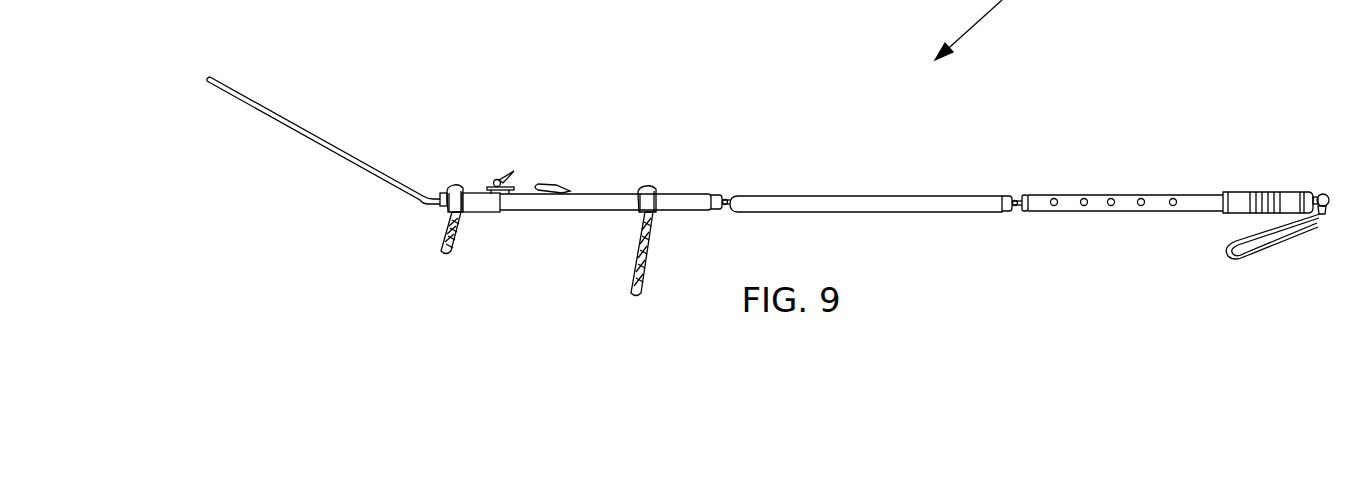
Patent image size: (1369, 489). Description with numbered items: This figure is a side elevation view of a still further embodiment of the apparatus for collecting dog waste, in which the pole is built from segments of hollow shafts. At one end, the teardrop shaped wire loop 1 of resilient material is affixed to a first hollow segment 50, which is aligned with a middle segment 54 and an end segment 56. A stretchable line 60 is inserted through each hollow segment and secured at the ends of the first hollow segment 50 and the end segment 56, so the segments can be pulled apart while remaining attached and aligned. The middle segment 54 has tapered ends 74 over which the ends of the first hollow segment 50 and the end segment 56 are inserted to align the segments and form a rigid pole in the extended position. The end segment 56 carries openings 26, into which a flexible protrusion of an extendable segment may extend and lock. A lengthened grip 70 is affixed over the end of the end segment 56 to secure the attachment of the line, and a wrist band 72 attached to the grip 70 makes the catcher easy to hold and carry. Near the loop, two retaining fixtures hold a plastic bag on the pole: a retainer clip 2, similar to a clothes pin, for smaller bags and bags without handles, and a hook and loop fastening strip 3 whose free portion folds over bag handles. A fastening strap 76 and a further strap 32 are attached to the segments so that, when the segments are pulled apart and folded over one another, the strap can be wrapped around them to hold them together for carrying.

The teardrop shaped wire loop 1 is at (328, 153).
The retainer clip 2 is at (498, 178).
The fastening strip 3 is at (558, 188).
The strap 32 is at (438, 238).
The first hollow segment 50 is at (580, 197).
The fastening strap 76 is at (637, 253).
The stretchable line 60 is at (1010, 203).
The tapered ends 74 is at (727, 200).
The middle segment 54 is at (892, 200).
The openings 26 is at (1111, 198).
The end segment 56 is at (1190, 203).
The lengthened grip 70 is at (1268, 193).
The wrist band 72 is at (1227, 257).